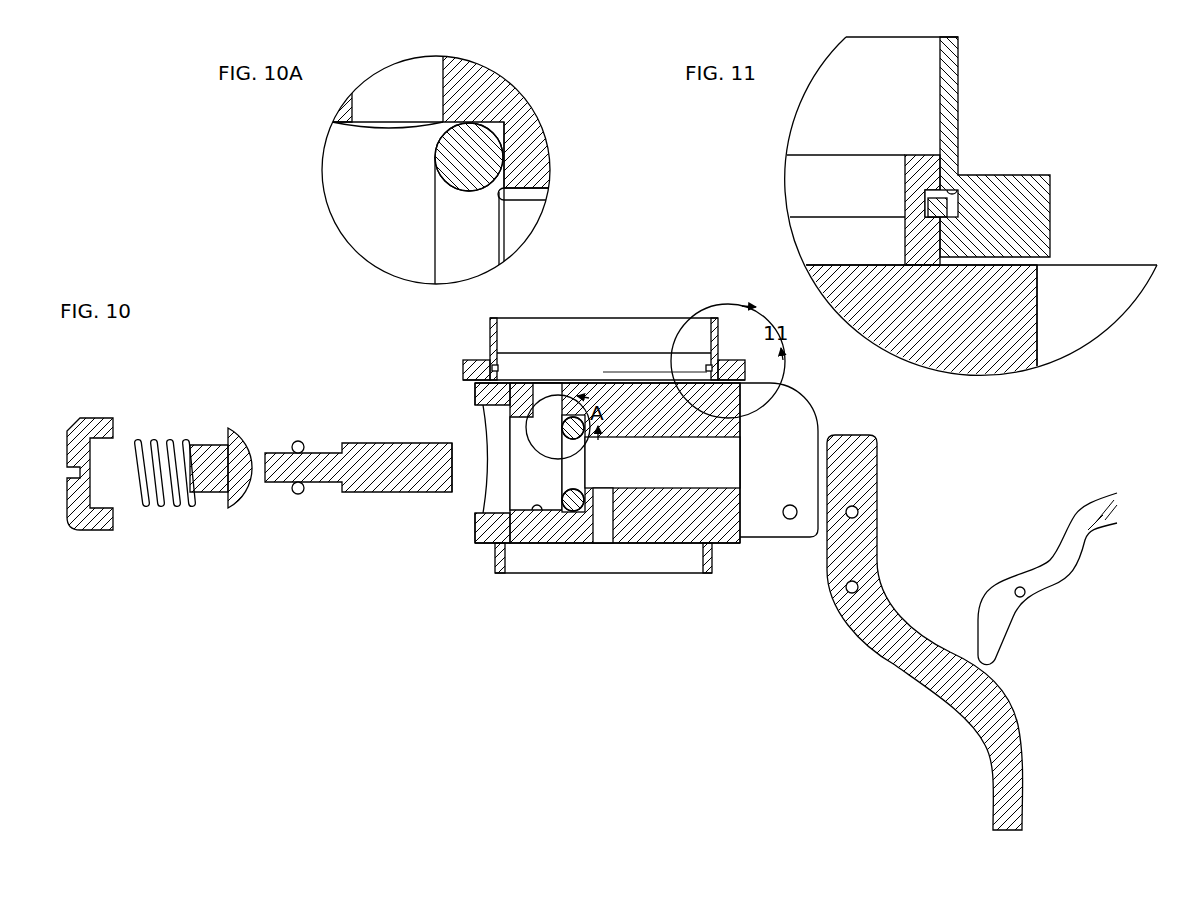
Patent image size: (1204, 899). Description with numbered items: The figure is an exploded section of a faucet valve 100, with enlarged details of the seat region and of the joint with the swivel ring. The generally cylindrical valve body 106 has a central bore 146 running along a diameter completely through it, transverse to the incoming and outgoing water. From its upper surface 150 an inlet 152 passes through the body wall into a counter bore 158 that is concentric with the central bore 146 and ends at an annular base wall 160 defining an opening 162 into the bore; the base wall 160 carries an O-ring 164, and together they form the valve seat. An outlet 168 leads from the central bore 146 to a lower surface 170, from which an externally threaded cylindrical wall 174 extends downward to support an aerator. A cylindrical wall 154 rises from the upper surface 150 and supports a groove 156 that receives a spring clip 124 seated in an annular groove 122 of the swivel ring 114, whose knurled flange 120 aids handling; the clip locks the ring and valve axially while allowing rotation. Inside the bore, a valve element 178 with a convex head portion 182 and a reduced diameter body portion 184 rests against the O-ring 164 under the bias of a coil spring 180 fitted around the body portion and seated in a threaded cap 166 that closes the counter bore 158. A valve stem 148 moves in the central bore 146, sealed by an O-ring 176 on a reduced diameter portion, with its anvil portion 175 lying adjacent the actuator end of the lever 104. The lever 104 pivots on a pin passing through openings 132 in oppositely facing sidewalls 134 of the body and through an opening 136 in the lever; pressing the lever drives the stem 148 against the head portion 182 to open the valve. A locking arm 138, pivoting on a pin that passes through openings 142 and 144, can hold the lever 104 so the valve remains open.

In FIG. 10, the valve 100 is at (258, 324).
In FIG. 10, the lever 104 is at (904, 632).
In FIG. 11, the valve body 106 is at (985, 372).
In FIG. 10, the valve body 106 is at (552, 491).
In FIG. 11, the swivel ring 114 is at (1030, 147).
In FIG. 11, the flange 120 is at (1050, 190).
In FIG. 11, the annular groove 122 is at (949, 203).
In FIG. 11, the spring clip 124 is at (956, 202).
In FIG. 10, the openings 132 is at (789, 521).
In FIG. 10, the sidewalls 134 is at (808, 491).
In FIG. 10, the opening 136 is at (858, 512).
In FIG. 10, the locking arm 138 is at (1047, 570).
In FIG. 10, the opening 142 is at (848, 592).
In FIG. 10, the opening 144 is at (1025, 597).
In FIG. 10, the central bore 146 is at (660, 480).
In FIG. 10, the valve stem 148 is at (362, 494).
In FIG. 10A, the upper surface 150 is at (365, 93).
In FIG. 11, the upper surface 150 is at (843, 265).
In FIG. 10, the upper surface 150 is at (640, 353).
In FIG. 10, the inlet 152 is at (542, 390).
In FIG. 11, the cylindrical wall 154 is at (905, 170).
In FIG. 10A, the groove 156 is at (335, 153).
In FIG. 11, the groove 156 is at (927, 203).
In FIG. 10, the counter bore 158 is at (537, 512).
In FIG. 10A, the annular base wall 160 is at (545, 197).
In FIG. 10A, the opening 162 is at (520, 231).
In FIG. 10, the opening 162 is at (590, 467).
In FIG. 10A, the O-ring 164 is at (455, 253).
In FIG. 10, the O-ring 164 is at (571, 514).
In FIG. 10, the cap 166 is at (90, 532).
In FIG. 10, the outlet 168 is at (600, 548).
In FIG. 10, the lower surface 170 is at (675, 575).
In FIG. 10, the cylindrical wall 174 is at (492, 556).
In FIG. 10, the anvil portion 175 is at (458, 458).
In FIG. 10, the O-ring 176 is at (297, 496).
In FIG. 10, the valve element 178 is at (223, 510).
In FIG. 10, the coil spring 180 is at (150, 440).
In FIG. 10, the head portion 182 is at (243, 512).
In FIG. 10, the body portion 184 is at (214, 508).